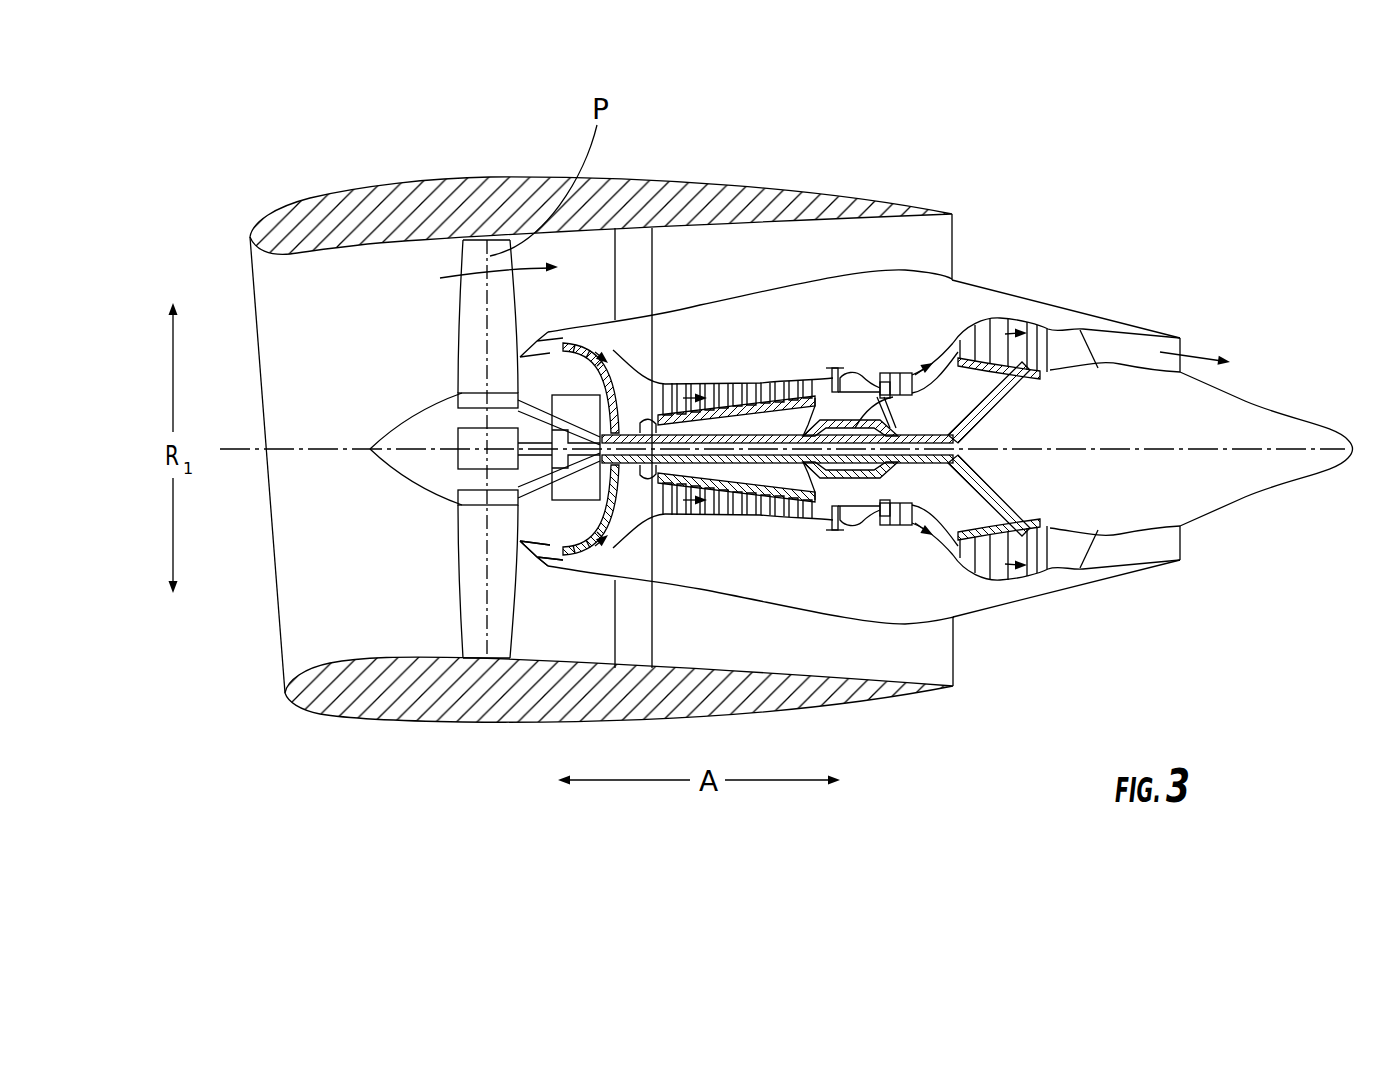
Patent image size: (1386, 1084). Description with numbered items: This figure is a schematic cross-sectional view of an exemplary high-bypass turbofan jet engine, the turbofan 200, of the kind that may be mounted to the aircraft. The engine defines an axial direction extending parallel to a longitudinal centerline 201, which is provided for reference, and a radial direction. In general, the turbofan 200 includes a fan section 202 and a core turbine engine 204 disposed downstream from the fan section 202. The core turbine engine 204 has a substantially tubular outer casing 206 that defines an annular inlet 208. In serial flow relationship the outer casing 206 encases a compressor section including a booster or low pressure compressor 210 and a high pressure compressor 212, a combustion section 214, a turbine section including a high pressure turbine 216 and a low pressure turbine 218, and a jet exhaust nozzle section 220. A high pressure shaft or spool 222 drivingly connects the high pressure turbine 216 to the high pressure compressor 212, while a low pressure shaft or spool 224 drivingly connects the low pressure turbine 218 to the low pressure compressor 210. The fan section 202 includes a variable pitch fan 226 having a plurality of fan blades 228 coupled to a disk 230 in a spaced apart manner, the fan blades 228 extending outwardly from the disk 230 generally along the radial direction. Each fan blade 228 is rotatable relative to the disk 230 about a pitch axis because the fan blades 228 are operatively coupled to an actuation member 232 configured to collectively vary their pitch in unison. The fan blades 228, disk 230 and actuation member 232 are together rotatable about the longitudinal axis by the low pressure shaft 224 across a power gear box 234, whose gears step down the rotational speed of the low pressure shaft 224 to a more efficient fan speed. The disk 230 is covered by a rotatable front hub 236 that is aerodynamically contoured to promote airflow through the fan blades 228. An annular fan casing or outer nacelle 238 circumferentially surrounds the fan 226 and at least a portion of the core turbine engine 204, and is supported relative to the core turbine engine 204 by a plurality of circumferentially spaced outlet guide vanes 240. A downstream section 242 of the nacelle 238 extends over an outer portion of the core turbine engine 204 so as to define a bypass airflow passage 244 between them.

The turbofan 200 is at (1099, 193).
The longitudinal centerline 201 is at (1120, 447).
The fan section 202 is at (421, 269).
The core turbine engine 204 is at (772, 334).
The outer casing 206 is at (813, 613).
The annular inlet 208 is at (560, 553).
The low pressure compressor 210 is at (591, 568).
The high pressure compressor 212 is at (680, 503).
The combustion section 214 is at (853, 512).
The high pressure turbine 216 is at (950, 522).
The low pressure turbine 218 is at (1038, 579).
The jet exhaust nozzle section 220 is at (1098, 557).
The high pressure shaft or spool 222 is at (857, 414).
The low pressure shaft or spool 224 is at (950, 418).
The variable pitch fan 226 is at (432, 504).
The fan blades 228 is at (460, 600).
The disk 230 is at (482, 400).
The actuation member 232 is at (458, 428).
The power gear box 234 is at (615, 412).
The front hub 236 is at (370, 449).
The outer nacelle 238 is at (502, 722).
The outlet guide vanes 240 is at (652, 257).
The downstream section 242 is at (881, 198).
The bypass airflow passage 244 is at (985, 253).